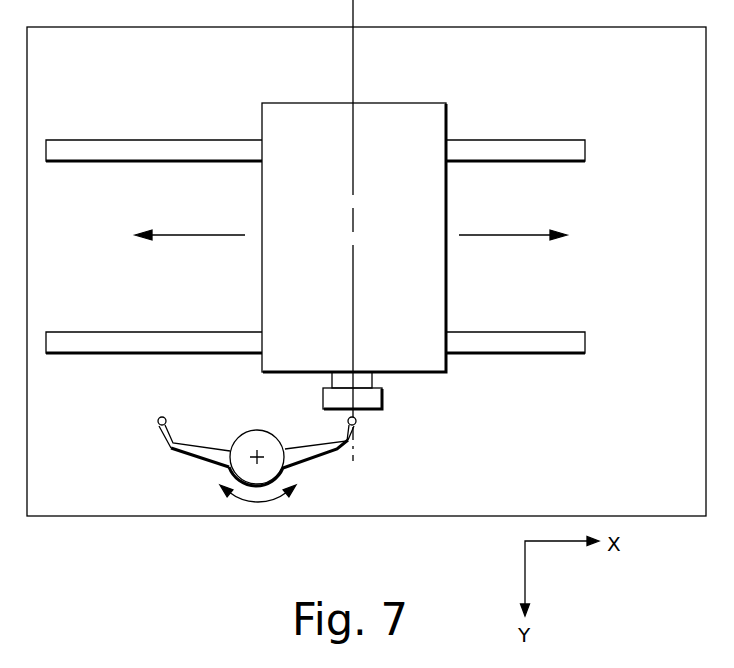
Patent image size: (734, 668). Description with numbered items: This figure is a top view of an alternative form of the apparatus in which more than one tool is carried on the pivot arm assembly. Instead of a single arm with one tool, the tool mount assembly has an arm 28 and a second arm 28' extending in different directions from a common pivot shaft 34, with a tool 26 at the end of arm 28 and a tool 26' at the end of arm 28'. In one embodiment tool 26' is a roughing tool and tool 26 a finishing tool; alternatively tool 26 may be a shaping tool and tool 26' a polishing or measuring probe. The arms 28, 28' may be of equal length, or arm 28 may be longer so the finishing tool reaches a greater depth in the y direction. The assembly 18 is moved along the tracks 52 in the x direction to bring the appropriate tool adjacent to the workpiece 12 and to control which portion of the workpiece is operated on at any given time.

The workpiece 12 is at (365, 403).
The assembly 18 is at (399, 103).
The tool 26 is at (372, 450).
The tool 26' is at (135, 411).
The arm 28 is at (291, 466).
The second arm 28' is at (184, 460).
The pivot shaft 34 is at (253, 454).
The tracks 52 is at (585, 146).